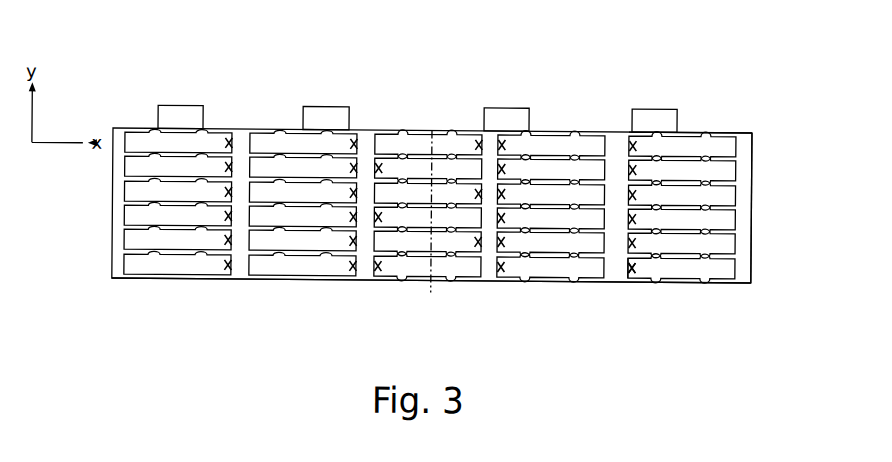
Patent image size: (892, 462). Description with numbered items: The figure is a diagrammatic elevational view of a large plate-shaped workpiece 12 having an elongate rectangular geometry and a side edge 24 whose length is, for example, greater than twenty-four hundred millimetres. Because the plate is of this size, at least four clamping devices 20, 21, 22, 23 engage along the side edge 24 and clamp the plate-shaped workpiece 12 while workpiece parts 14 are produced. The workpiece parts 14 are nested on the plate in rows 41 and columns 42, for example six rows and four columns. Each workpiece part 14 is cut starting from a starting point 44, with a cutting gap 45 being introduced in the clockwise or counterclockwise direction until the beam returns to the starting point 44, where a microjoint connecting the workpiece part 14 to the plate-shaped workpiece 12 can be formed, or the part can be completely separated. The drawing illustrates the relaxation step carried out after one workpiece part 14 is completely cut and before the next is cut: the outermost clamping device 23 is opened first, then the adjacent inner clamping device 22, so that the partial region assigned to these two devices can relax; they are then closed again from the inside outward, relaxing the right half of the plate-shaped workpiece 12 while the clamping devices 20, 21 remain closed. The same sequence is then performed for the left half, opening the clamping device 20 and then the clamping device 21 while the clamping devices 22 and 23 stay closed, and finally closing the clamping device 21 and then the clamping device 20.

The plate-shaped workpiece 12 is at (121, 266).
The workpiece part 14 is at (182, 268).
The clamping device 20 is at (181, 86).
The clamping device 21 is at (327, 86).
The clamping device 22 is at (511, 85).
The clamping device 23 is at (658, 84).
The side edge 24 is at (693, 124).
The rows 41 is at (769, 140).
The columns 42 is at (528, 297).
The starting point 44 is at (630, 263).
The cutting gap 45 is at (645, 266).